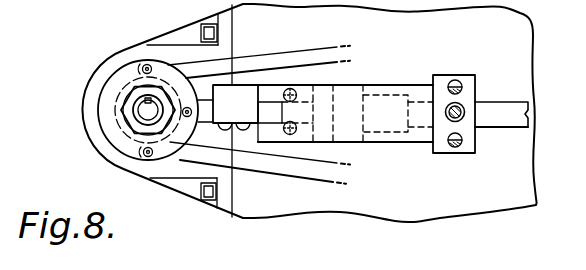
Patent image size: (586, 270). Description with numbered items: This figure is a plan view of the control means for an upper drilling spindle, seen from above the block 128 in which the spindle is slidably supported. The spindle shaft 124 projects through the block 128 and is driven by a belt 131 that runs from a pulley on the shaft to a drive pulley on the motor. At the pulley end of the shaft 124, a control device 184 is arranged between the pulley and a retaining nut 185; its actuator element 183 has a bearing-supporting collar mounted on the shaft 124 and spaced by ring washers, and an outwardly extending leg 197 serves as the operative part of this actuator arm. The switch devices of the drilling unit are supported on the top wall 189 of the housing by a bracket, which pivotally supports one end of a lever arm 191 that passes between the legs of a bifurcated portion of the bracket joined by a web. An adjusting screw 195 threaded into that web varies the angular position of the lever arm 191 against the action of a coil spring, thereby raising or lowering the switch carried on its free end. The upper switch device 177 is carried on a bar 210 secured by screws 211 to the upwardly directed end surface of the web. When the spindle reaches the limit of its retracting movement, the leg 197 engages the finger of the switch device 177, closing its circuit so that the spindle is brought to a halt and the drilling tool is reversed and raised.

The block 128 is at (138, 52).
The retaining nut 185 is at (118, 100).
The shaft 124 is at (148, 109).
The actuator element 183 is at (107, 125).
The control device 184 is at (117, 137).
The belt 131 is at (252, 66).
The switch device 177 is at (233, 113).
The leg 197 is at (212, 126).
The bar 210 is at (378, 93).
The screws 211 is at (457, 82).
The adjusting screw 195 is at (463, 107).
The lever arm 191 is at (503, 114).
The top wall 189 is at (440, 190).